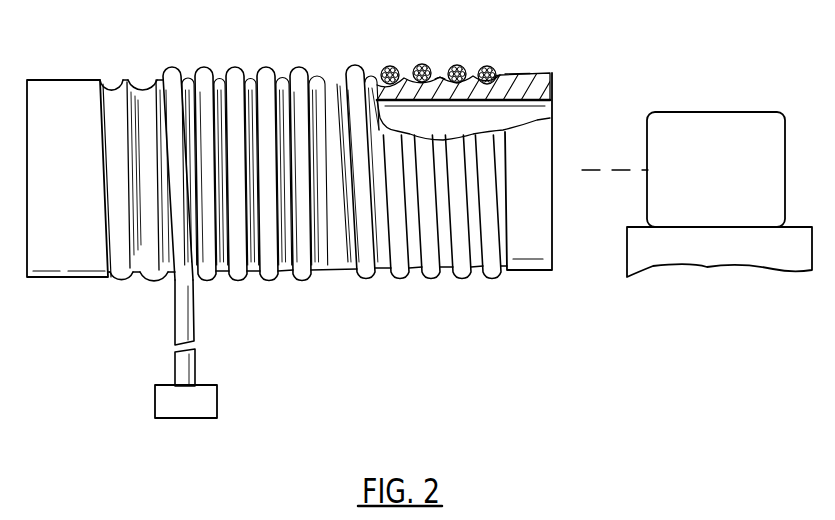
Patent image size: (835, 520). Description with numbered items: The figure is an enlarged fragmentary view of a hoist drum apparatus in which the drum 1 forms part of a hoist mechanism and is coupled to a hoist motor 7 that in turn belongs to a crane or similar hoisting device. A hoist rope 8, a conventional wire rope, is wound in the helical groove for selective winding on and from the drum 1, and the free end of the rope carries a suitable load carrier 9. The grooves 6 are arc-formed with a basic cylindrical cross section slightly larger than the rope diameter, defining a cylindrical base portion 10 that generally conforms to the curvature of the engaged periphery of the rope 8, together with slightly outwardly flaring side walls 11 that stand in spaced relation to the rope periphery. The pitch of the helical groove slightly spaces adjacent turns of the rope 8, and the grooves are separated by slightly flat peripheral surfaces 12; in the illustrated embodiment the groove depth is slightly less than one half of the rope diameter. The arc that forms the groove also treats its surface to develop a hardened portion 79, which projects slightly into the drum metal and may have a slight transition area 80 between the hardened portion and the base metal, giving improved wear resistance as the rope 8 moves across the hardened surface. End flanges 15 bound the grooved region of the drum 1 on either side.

The drum 1 is at (143, 82).
The grooves 6 is at (153, 263).
The hoist motor 7 is at (719, 112).
The hoist rope 8 is at (178, 313).
The load carrier 9 is at (219, 394).
The cylindrical base portion 10 is at (458, 80).
The side walls 11 is at (441, 77).
The flat peripheral surfaces 12 is at (259, 287).
The drum flange 15 is at (62, 80).
The hardened portion 79 is at (497, 74).
The transition area 80 is at (518, 75).